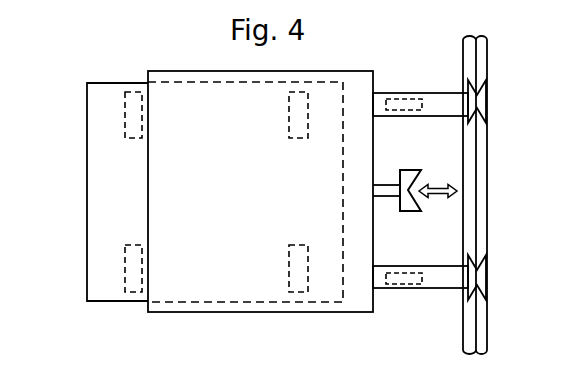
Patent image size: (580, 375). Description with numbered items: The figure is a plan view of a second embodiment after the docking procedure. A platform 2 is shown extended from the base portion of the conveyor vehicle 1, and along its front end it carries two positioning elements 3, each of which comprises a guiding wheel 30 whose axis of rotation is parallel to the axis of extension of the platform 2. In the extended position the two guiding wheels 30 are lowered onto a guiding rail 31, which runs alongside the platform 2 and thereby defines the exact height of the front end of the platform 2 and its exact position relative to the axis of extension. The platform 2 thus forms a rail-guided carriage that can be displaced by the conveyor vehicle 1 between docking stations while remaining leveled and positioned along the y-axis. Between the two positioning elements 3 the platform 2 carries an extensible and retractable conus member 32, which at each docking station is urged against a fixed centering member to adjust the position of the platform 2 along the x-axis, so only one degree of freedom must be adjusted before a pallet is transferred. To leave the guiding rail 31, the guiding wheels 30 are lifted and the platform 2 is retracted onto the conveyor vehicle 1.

The conveyor vehicle 1 is at (108, 125).
The platform 2 is at (181, 115).
The positioning element 3 is at (433, 100).
The guiding wheel 30 is at (479, 96).
The guiding rail 31 is at (483, 163).
The conus member 32 is at (417, 203).